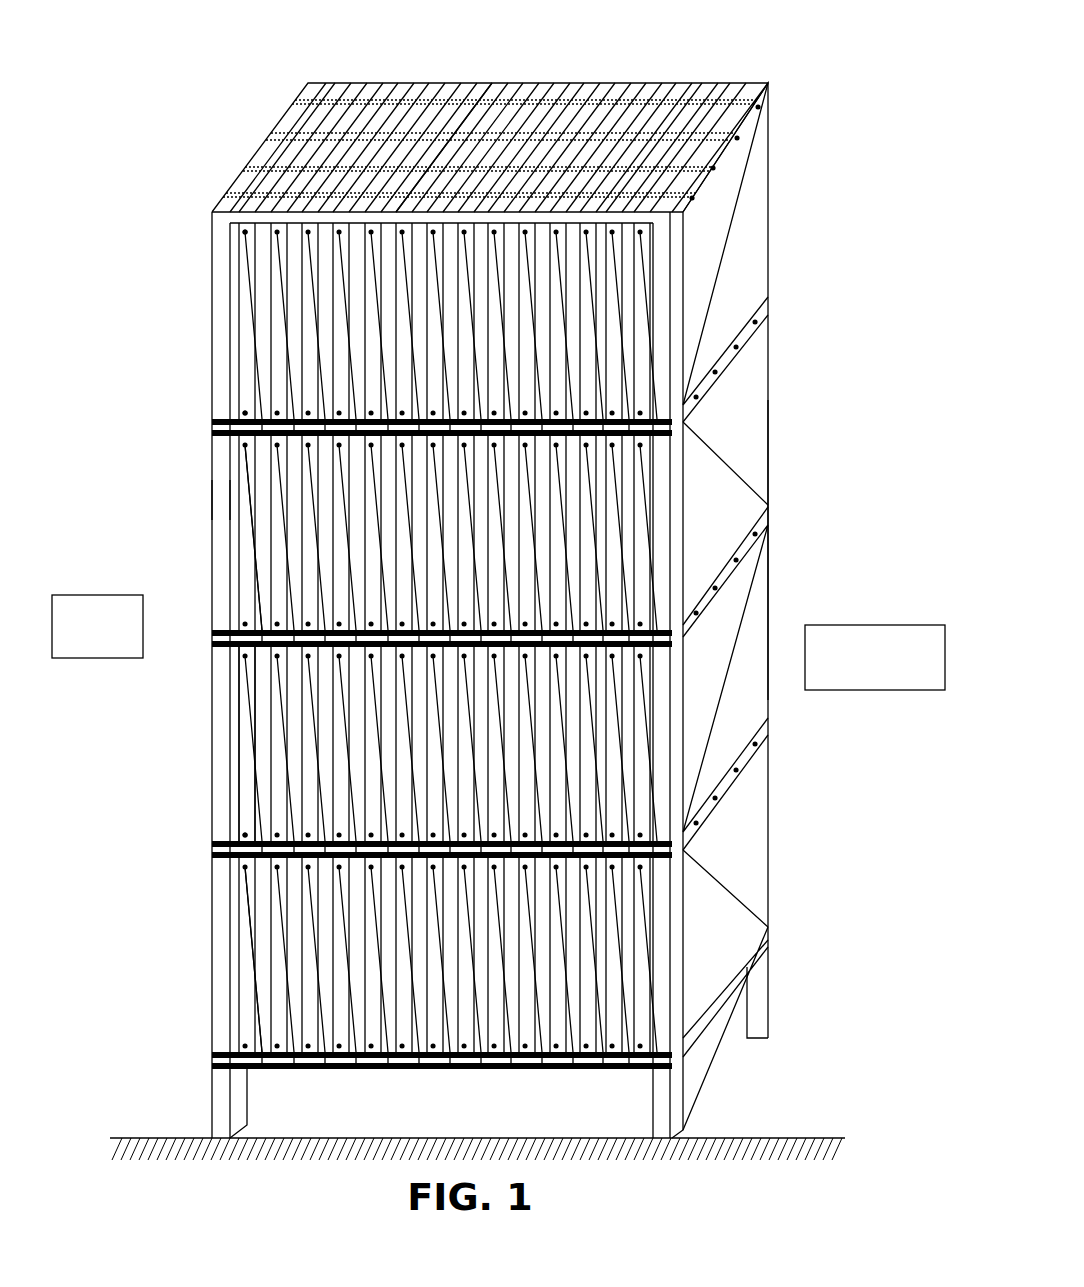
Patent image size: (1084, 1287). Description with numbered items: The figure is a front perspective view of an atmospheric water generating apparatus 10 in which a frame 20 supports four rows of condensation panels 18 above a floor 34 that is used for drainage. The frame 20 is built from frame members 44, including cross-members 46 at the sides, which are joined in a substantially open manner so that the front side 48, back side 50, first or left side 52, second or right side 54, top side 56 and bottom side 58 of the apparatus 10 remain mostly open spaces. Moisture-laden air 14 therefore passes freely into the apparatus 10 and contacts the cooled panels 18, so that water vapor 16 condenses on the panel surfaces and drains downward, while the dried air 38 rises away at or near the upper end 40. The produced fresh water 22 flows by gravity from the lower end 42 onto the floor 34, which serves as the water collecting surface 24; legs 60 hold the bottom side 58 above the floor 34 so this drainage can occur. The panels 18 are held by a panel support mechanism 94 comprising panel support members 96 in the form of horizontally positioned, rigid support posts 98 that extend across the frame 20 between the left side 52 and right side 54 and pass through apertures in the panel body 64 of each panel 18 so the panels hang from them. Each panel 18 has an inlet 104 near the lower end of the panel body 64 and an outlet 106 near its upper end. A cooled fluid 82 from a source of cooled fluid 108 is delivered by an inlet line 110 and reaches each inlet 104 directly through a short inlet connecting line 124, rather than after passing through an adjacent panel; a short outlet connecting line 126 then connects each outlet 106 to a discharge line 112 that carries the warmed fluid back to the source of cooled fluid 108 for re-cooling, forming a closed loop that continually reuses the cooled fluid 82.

The atmospheric water generating apparatus 10 is at (825, 262).
The moisture-laden air 14 is at (115, 416).
The water vapor 16 is at (919, 551).
The condensation panels 18 is at (243, 767).
The frame 20 is at (208, 499).
The produced fresh water 22 is at (432, 1072).
The water collecting surface 24 is at (320, 1125).
The floor 34 is at (735, 1133).
The dried air 38 is at (462, 70).
The upper end 40 is at (197, 211).
The lower end 42 is at (192, 1067).
The frame members 44 is at (277, 137).
The cross-members 46 is at (737, 452).
The front side 48 is at (215, 970).
The back side 50 is at (667, 72).
The first or left side 52 is at (160, 771).
The second or right side 54 is at (805, 773).
The top side 56 is at (307, 112).
The bottom side 58 is at (515, 1078).
The legs 60 is at (752, 1008).
The panel body 64 is at (243, 565).
The cooled fluid 82 is at (683, 633).
The panel support mechanism 94 is at (592, 128).
The panel support members 96 is at (405, 100).
The support posts 98 is at (527, 98).
The inlet 104 is at (238, 415).
The outlet 106 is at (240, 235).
The source of cooled fluid 108 is at (212, 633).
The inlet line 110 is at (292, 1065).
The discharge line 112 is at (586, 1065).
The inlet connecting line 124 is at (240, 835).
The outlet connecting line 126 is at (243, 900).